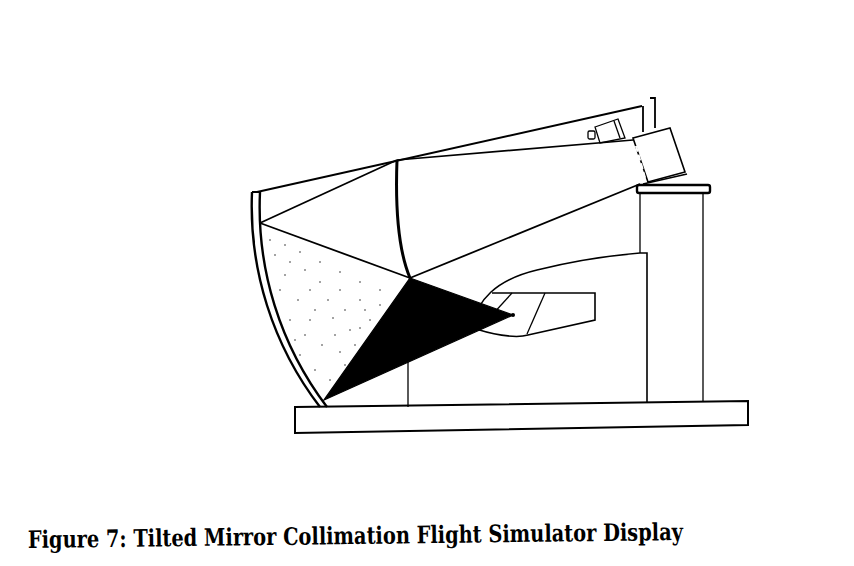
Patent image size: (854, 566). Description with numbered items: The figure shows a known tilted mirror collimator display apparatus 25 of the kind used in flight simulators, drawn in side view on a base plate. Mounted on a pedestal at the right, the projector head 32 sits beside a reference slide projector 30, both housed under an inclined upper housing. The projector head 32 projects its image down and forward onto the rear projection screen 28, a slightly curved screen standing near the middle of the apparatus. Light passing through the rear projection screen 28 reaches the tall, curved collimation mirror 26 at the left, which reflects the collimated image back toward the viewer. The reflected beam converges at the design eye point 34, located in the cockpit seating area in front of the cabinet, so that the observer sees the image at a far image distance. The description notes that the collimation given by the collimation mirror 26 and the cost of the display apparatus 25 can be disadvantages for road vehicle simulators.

The tilted mirror collimator display apparatus 25 is at (752, 270).
The collimation mirror 26 is at (251, 215).
The rear projection screen 28 is at (397, 158).
The reference slide projector 30 is at (598, 128).
The projector head 32 is at (673, 128).
The design eye point 34 is at (515, 318).